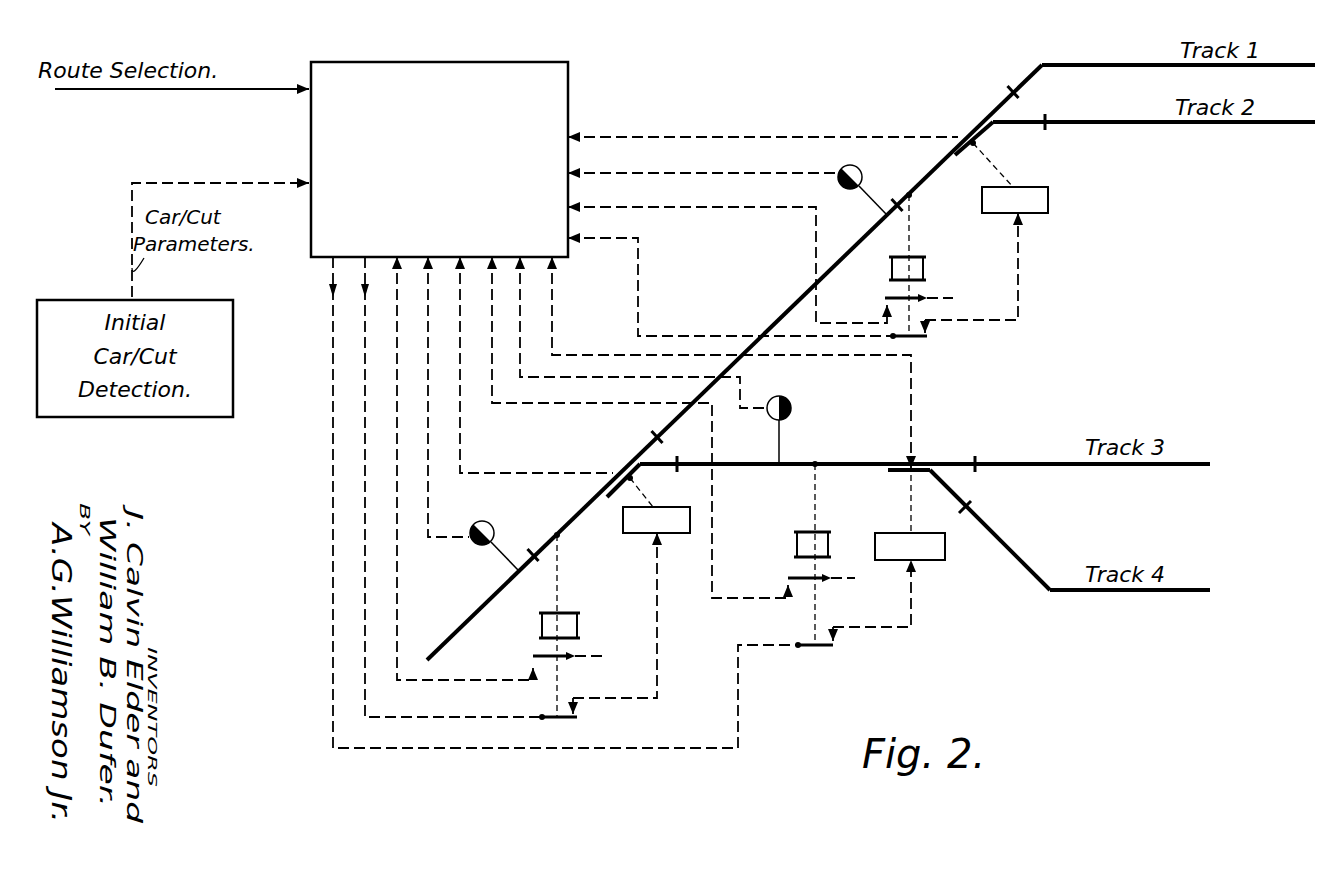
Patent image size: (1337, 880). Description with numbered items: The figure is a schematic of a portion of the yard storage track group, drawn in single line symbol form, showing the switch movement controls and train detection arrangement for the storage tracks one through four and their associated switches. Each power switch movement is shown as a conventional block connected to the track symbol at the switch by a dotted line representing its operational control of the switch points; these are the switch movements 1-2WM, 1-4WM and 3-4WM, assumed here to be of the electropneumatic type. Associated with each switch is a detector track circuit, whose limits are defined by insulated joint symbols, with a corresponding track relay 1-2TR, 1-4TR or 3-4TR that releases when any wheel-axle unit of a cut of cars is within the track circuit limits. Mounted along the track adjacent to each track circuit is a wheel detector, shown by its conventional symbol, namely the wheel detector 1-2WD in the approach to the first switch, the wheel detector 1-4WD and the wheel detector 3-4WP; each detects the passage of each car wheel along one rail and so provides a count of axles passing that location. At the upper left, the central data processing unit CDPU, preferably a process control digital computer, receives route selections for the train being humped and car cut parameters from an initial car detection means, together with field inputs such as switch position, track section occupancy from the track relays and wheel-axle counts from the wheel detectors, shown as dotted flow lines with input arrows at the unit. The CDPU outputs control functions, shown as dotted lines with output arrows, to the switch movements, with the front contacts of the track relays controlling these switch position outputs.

The central data processing unit CDPU is at (481, 60).
The wheel detector 1-2WD is at (843, 170).
The track relay 1-2TR is at (916, 265).
The switch movement 1-2WM is at (1009, 176).
The wheel detector 1-4WD is at (516, 509).
The track relay 1-4TR is at (565, 626).
The switch movement 1-4WM is at (656, 504).
The wheel detector 3-4WP is at (801, 390).
The track relay 3-4TR is at (813, 554).
The switch movement 3-4WM is at (910, 517).